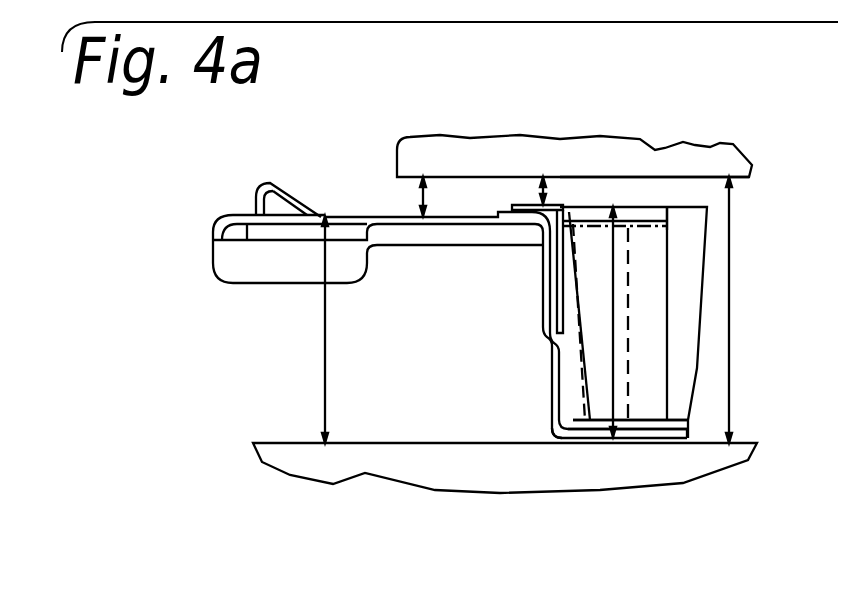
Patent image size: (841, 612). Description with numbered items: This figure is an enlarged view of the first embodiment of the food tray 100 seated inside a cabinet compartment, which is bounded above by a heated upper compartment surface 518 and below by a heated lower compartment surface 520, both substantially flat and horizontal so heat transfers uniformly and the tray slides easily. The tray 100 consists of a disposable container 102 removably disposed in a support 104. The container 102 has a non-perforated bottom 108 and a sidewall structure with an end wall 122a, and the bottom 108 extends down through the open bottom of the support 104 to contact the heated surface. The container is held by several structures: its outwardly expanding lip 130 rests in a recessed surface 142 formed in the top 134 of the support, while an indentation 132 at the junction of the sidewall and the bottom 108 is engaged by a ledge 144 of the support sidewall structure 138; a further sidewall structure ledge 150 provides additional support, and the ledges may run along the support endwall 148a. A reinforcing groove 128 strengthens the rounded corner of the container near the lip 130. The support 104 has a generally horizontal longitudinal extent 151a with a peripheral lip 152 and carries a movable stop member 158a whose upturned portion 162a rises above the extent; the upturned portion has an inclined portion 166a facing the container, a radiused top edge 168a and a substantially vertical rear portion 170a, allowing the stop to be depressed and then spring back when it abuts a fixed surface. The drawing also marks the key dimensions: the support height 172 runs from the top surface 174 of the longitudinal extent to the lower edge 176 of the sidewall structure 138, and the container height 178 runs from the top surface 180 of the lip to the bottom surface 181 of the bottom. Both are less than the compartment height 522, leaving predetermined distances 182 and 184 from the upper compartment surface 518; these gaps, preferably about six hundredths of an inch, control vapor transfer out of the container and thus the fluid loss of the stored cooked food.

The tray 100 is at (238, 388).
The disposable container 102 is at (718, 229).
The support 104 is at (211, 277).
The bottom 108 is at (688, 436).
The end wall 122a is at (574, 390).
The reinforcing groove 128 is at (712, 178).
The lip 130 is at (643, 220).
The indentation 132 is at (587, 436).
The top 134 is at (381, 220).
The sidewall structure 138 is at (546, 275).
The recessed surface 142 is at (520, 205).
The ledge 144 is at (560, 433).
The endwall 148a is at (541, 305).
The sidewall structure ledge 150 is at (552, 345).
The longitudinal extent 151a is at (343, 213).
The lip 152 is at (402, 243).
The movable stop member 158a is at (282, 210).
The upturned portion 162a is at (253, 188).
The inclined portion 166a is at (296, 210).
The radiused top edge 168a is at (258, 183).
The substantially vertical rear portion 170a is at (245, 213).
The height 172 is at (322, 352).
The top surface 174 is at (388, 216).
The lower edge 176 is at (568, 440).
The height 178 is at (613, 292).
The top surface 180 is at (534, 205).
The bottom surface 181 is at (687, 437).
The predetermined distance 182 is at (509, 205).
The predetermined distance 184 is at (553, 205).
The upper compartment surface 518 is at (745, 140).
The lower compartment surface 520 is at (355, 443).
The height 522 is at (731, 329).